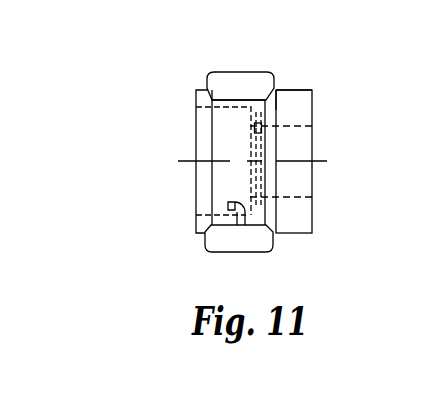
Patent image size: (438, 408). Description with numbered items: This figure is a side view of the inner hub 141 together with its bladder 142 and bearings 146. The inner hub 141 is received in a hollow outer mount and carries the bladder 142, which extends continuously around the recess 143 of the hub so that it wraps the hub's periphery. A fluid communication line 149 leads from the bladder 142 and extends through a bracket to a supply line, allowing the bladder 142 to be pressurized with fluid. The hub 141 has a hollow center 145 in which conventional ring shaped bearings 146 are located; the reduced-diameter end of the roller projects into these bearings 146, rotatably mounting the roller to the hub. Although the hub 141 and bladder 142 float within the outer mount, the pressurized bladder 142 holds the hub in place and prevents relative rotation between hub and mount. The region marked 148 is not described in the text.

The inner hub 141 is at (222, 117).
The bladder 142 is at (238, 77).
The recess 143 is at (265, 100).
The hollow center 145 is at (319, 179).
The ring shaped bearings 146 is at (294, 146).
The shoulder 148 is at (286, 90).
The fluid communication line 149 is at (235, 202).